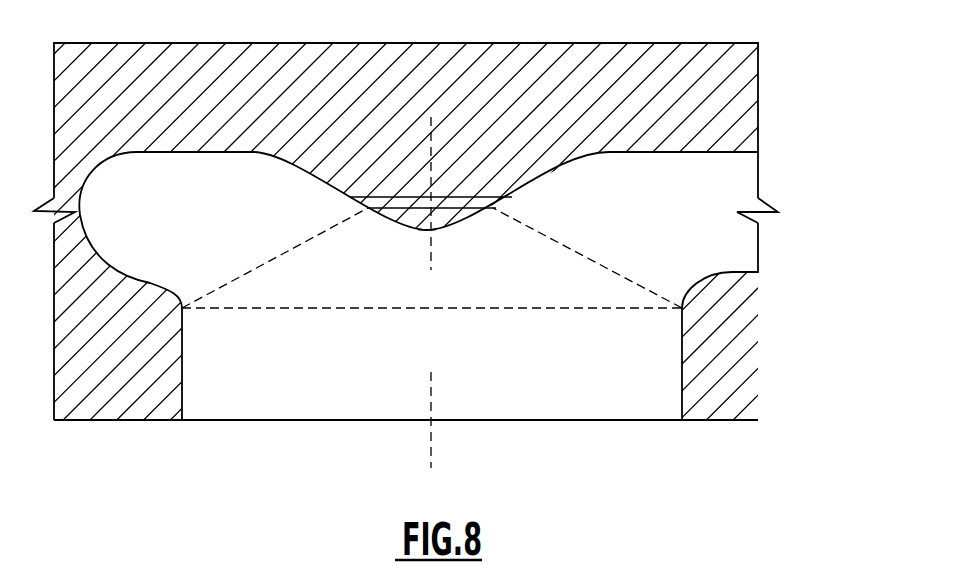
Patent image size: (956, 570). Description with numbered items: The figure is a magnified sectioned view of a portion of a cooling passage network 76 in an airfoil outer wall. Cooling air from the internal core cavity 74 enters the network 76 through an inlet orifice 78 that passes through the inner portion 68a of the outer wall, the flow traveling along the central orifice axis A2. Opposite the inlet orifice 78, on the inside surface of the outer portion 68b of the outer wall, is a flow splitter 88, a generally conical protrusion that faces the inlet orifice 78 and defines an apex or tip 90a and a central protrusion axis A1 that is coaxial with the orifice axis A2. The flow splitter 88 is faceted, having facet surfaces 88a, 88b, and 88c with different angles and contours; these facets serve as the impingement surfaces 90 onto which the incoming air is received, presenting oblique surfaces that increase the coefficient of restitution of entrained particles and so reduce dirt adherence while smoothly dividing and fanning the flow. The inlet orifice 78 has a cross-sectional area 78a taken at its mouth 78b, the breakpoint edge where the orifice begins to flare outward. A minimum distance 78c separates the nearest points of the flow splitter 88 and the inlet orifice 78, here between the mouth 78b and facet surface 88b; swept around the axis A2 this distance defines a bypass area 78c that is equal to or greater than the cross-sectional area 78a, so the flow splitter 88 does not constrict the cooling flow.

The inner portion of the airfoil outer wall 68a is at (713, 420).
The outer portion of the airfoil outer wall 68b is at (500, 53).
The internal core cavity 74 is at (323, 475).
The cooling passage network 76 is at (704, 146).
The inlet orifice 78 is at (431, 338).
The cross-sectional area of the inlet orifice 78a is at (540, 308).
The mouth of the inlet orifice 78b is at (682, 310).
The minimum distance / bypass area 78c is at (240, 272).
The flow splitter 88 is at (459, 227).
The facet surface 88a is at (395, 178).
The facet surface 88b is at (422, 202).
The facet surface 88c is at (453, 218).
The impingement surface 90 is at (340, 192).
The apex or tip 90a is at (432, 232).
The central protrusion axis A1 is at (431, 128).
The central orifice axis A2 is at (431, 447).